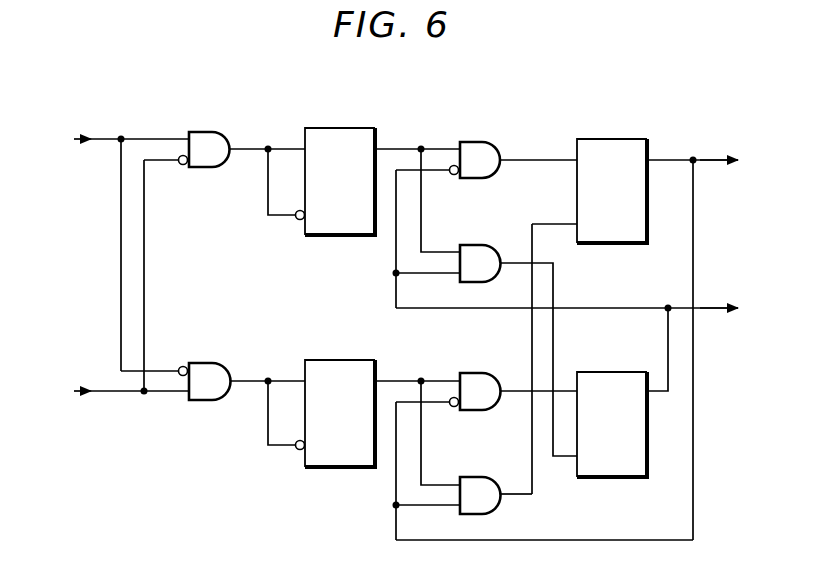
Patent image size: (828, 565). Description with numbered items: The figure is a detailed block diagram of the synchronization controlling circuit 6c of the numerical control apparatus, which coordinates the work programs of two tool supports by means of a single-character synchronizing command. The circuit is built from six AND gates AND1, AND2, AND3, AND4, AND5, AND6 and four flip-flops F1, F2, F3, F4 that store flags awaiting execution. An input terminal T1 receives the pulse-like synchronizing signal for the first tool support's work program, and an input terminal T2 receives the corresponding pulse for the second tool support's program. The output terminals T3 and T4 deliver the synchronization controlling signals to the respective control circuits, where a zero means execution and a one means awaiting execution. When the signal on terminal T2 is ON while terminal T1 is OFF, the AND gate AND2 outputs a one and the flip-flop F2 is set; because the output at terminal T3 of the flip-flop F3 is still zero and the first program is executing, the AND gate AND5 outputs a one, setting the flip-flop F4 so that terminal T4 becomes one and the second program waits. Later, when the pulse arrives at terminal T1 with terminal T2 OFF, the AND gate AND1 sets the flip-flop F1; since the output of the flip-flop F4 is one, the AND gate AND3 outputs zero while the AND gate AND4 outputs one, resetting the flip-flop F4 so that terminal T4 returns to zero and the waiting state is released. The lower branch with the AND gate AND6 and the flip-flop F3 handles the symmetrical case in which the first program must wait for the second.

The synchronization controlling circuit 6c is at (559, 78).
The input terminal T1 is at (70, 141).
The input terminal T2 is at (70, 393).
The output terminal T3 is at (719, 149).
The output terminal T4 is at (719, 297).
The AND gate AND1 is at (207, 131).
The AND gate AND2 is at (207, 363).
The AND gate AND3 is at (479, 142).
The AND gate AND4 is at (479, 245).
The AND gate AND5 is at (479, 373).
The AND gate AND6 is at (479, 477).
The flip-flop F1 is at (346, 128).
The flip-flop F2 is at (346, 360).
The flip-flop F3 is at (619, 139).
The flip-flop F4 is at (619, 372).